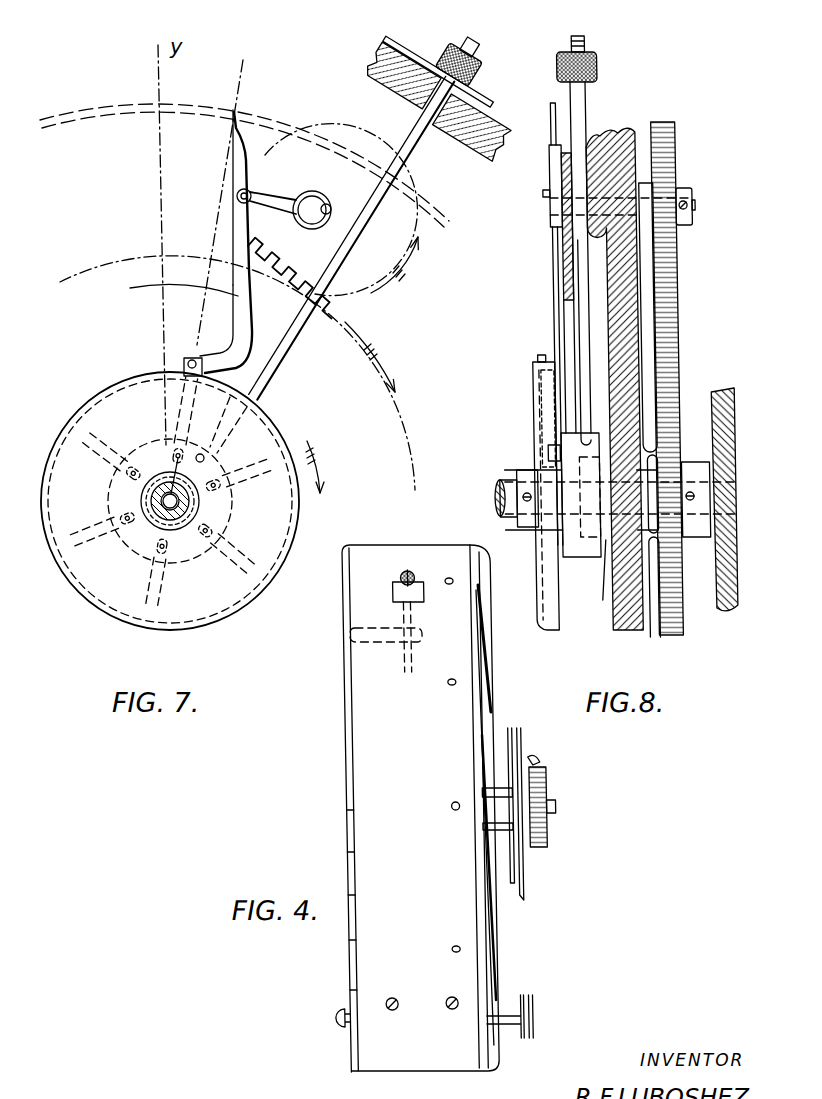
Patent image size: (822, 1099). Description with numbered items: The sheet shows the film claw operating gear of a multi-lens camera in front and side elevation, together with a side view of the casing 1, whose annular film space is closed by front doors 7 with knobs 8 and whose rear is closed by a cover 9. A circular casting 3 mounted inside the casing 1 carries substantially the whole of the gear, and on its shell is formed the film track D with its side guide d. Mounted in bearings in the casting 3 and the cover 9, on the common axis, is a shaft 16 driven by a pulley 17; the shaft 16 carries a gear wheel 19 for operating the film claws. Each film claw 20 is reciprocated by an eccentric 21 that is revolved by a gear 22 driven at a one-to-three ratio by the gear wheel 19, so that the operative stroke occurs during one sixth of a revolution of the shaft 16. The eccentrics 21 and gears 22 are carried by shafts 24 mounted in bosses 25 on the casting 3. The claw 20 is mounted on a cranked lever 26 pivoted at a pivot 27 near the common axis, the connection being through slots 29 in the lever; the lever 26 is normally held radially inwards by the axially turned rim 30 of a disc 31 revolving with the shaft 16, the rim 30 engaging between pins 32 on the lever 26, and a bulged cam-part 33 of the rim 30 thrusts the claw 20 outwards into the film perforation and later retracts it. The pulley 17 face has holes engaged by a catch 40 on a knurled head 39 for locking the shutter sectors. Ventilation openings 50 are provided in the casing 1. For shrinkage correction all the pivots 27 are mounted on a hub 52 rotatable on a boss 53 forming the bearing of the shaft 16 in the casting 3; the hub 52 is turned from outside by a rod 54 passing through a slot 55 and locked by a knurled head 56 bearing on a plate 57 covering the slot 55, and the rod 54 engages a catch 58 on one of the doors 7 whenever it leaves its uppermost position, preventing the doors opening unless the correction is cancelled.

In FIG. 4, the casing 1 is at (375, 708).
In FIG. 8, the casting 3 is at (624, 283).
In FIG. 4, the front doors 7 is at (346, 770).
In FIG. 4, the knobs 8 is at (328, 1012).
In FIG. 8, the cover 9 is at (716, 392).
In FIG. 4, the cover 9 is at (472, 957).
In FIG. 7, the shaft 16 is at (155, 518).
In FIG. 8, the shaft 16 is at (513, 485).
In FIG. 4, the pulley 17 is at (517, 748).
In FIG. 8, the gear wheel 19 is at (678, 336).
In FIG. 7, the film claw 20 is at (237, 113).
In FIG. 8, the film claw 20 is at (553, 103).
In FIG. 7, the eccentric 21 is at (312, 200).
In FIG. 8, the eccentric 21 is at (550, 192).
In FIG. 7, the gear 22 is at (415, 230).
In FIG. 8, the gear 22 is at (677, 136).
In FIG. 7, the shafts 24 is at (327, 206).
In FIG. 8, the shafts 24 is at (552, 208).
In FIG. 8, the bosses 25 is at (598, 226).
In FIG. 7, the lever 26 is at (138, 294).
In FIG. 8, the lever 26 is at (552, 296).
In FIG. 7, the pivots 27 is at (172, 466).
In FIG. 8, the pivots 27 is at (546, 450).
In FIG. 7, the slots 29 is at (200, 548).
In FIG. 7, the rim 30 is at (282, 423).
In FIG. 8, the rim 30 is at (541, 631).
In FIG. 7, the disc 31 is at (158, 612).
In FIG. 8, the disc 31 is at (540, 592).
In FIG. 7, the pins 32 is at (188, 362).
In FIG. 8, the pins 32 is at (538, 358).
In FIG. 7, the cam-part 33 is at (118, 378).
In FIG. 4, the knurled head 39 is at (540, 840).
In FIG. 4, the catch 40 is at (533, 757).
In FIG. 4, the ventilation openings 50 is at (447, 810).
In FIG. 7, the hub 52 is at (130, 583).
In FIG. 8, the hub 52 is at (570, 548).
In FIG. 8, the boss 53 is at (596, 600).
In FIG. 7, the rod 54 is at (282, 332).
In FIG. 8, the rod 54 is at (580, 99).
In FIG. 4, the rod 54 is at (403, 657).
In FIG. 7, the slot 55 is at (447, 113).
In FIG. 8, the knurled head 56 is at (562, 58).
In FIG. 4, the knurled head 56 is at (404, 574).
In FIG. 7, the plate 57 is at (421, 58).
In FIG. 4, the plate 57 is at (418, 582).
In FIG. 4, the catch 58 is at (354, 638).
In FIG. 7, the side guide d is at (75, 118).
In FIG. 7, the film track D is at (115, 116).